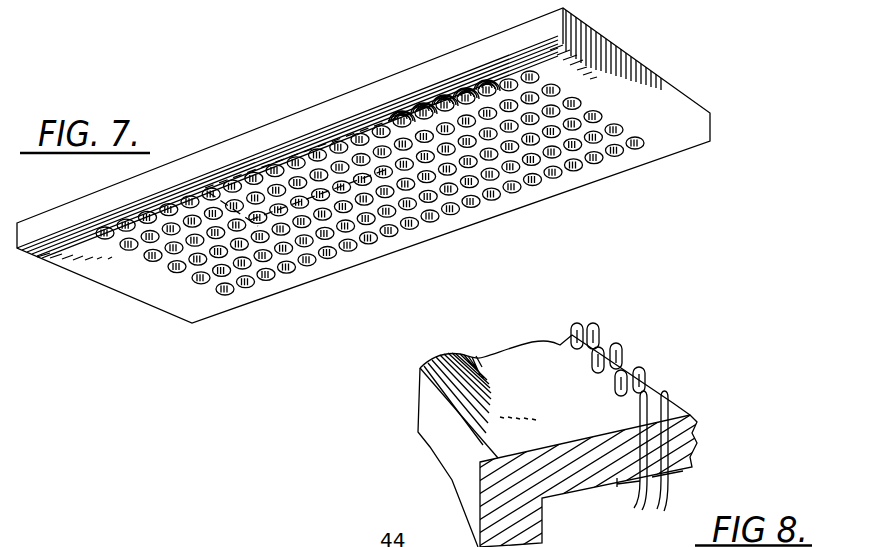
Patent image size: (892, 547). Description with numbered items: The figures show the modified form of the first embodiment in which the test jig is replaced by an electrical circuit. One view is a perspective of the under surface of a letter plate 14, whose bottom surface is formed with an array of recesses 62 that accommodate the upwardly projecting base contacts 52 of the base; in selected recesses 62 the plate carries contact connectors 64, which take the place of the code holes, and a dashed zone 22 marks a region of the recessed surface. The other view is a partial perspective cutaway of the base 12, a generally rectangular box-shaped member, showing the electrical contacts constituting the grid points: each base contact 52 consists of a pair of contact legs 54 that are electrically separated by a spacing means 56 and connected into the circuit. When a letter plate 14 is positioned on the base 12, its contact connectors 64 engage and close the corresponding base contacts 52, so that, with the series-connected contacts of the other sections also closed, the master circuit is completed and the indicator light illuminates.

In FIG. 7, the letter plate 14 is at (683, 101).
In FIG. 7, the dashed area 22 is at (322, 140).
In FIG. 7, the recesses 62 is at (575, 171).
In FIG. 7, the contact connectors 64 is at (487, 81).
In FIG. 8, the base 12 is at (438, 449).
In FIG. 8, the base contacts 52 is at (624, 345).
In FIG. 8, the contact legs 54 is at (593, 323).
In FIG. 8, the spacing means 56 is at (650, 444).